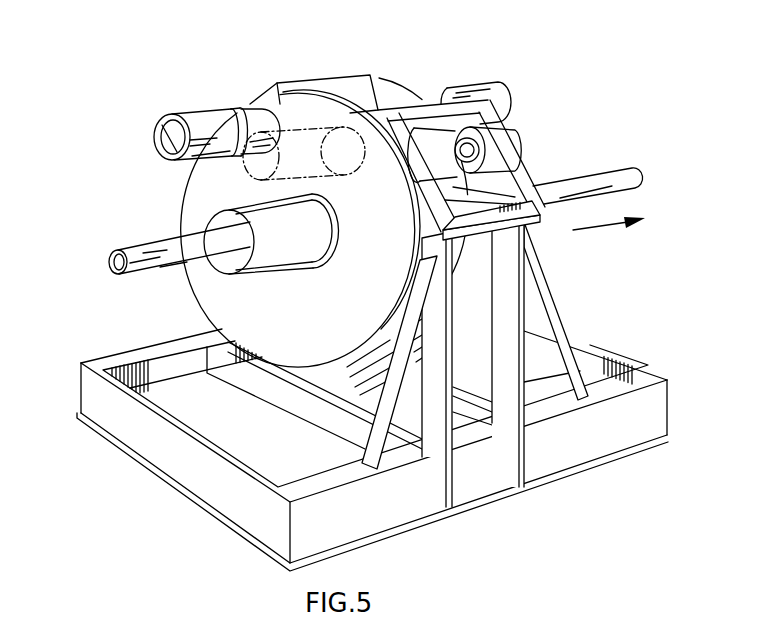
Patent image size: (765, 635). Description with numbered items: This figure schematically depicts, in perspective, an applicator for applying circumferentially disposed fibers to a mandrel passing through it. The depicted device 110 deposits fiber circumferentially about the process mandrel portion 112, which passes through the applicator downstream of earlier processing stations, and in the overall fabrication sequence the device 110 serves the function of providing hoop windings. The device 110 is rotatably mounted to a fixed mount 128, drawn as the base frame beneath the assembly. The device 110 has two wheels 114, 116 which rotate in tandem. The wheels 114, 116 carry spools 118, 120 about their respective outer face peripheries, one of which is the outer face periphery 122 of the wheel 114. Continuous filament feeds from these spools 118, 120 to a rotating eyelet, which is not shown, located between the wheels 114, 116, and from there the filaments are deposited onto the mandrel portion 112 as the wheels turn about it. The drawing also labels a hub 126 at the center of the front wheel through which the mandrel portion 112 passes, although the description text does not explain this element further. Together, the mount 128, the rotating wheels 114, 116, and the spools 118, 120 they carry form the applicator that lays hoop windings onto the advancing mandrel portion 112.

The device 110 is at (243, 43).
The process mandrel portion 112 is at (123, 245).
The wheel 114 is at (310, 115).
The wheel 116 is at (388, 97).
The spool 118 is at (203, 112).
The spool 120 is at (492, 80).
The outer face periphery 122 is at (325, 343).
The hub 126 is at (205, 206).
The fixed mount 128 is at (188, 469).